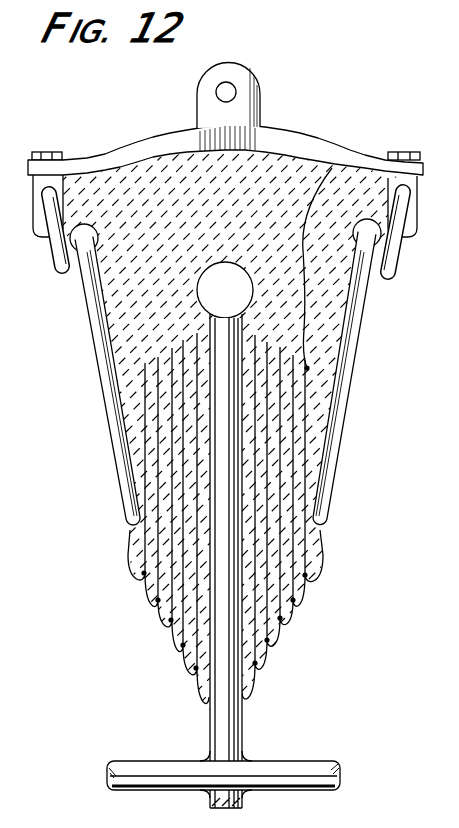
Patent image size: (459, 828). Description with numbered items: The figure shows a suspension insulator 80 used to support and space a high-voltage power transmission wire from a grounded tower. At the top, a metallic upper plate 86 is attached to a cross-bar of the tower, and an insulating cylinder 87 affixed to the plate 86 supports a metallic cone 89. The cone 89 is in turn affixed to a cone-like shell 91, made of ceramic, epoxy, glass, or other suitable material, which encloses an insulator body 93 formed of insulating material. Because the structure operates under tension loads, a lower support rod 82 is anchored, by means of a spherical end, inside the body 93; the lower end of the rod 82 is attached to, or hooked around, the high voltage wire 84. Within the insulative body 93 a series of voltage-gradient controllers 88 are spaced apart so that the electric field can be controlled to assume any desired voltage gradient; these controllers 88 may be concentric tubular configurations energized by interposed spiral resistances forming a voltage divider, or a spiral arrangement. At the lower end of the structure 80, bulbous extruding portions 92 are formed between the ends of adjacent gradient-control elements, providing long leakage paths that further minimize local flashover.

The suspension insulator 80 is at (117, 512).
The lower rod 82 is at (244, 710).
The high voltage wire 84 is at (162, 761).
The metallic upper plate 86 is at (161, 134).
The insulating cylinder 87 is at (63, 189).
The voltage-gradient controllers 88 is at (200, 483).
The metallic cone 89 is at (68, 268).
The cone-like shell 91 is at (96, 336).
The bulbous extruding portions 92 is at (272, 641).
The insulator body 93 is at (278, 229).